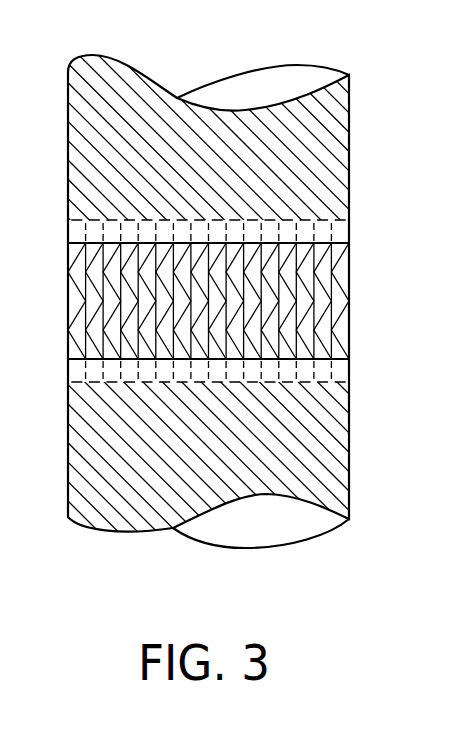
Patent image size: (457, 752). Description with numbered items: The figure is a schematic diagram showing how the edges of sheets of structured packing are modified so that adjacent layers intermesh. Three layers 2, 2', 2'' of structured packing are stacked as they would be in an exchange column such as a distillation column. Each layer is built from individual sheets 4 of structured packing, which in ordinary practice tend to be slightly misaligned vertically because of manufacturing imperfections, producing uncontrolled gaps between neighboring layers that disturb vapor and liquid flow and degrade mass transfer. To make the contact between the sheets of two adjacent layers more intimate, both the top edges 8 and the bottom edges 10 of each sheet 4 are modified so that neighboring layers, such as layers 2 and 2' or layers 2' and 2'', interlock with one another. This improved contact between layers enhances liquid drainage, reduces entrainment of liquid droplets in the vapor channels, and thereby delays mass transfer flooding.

The layer of structured packing 2 is at (239, 136).
The layer of structured packing 2' is at (241, 301).
The layer of structured packing 2'' is at (240, 466).
The sheet 4 is at (88, 262).
The top edge 8 is at (349, 236).
The bottom edge 10 is at (345, 372).